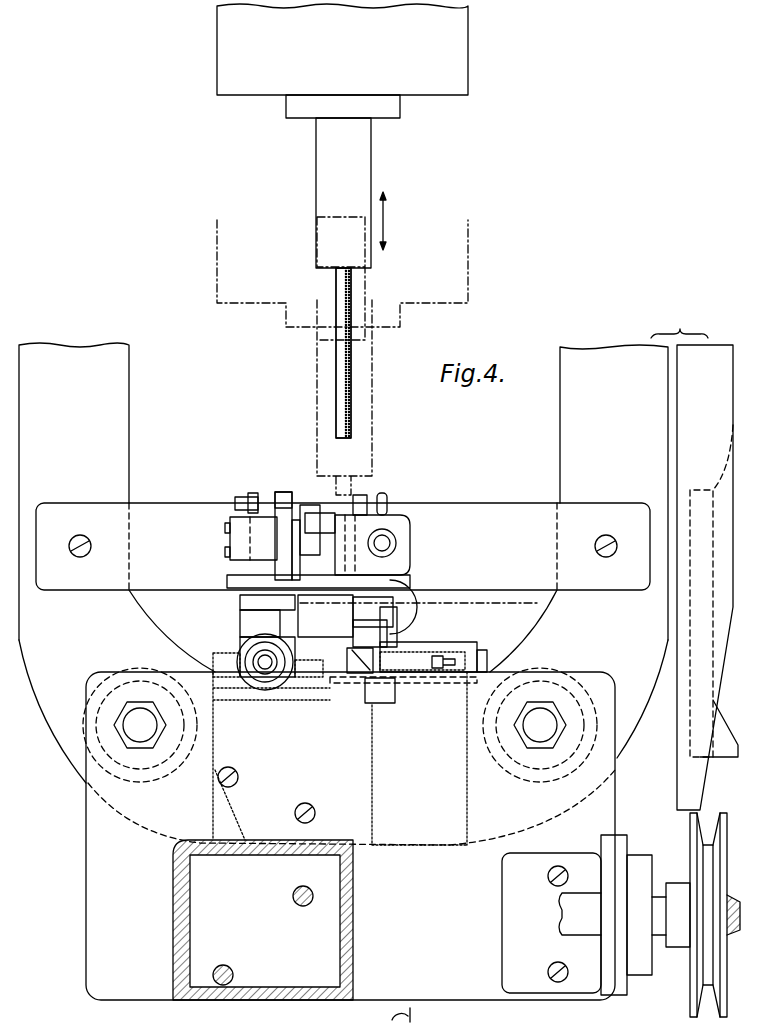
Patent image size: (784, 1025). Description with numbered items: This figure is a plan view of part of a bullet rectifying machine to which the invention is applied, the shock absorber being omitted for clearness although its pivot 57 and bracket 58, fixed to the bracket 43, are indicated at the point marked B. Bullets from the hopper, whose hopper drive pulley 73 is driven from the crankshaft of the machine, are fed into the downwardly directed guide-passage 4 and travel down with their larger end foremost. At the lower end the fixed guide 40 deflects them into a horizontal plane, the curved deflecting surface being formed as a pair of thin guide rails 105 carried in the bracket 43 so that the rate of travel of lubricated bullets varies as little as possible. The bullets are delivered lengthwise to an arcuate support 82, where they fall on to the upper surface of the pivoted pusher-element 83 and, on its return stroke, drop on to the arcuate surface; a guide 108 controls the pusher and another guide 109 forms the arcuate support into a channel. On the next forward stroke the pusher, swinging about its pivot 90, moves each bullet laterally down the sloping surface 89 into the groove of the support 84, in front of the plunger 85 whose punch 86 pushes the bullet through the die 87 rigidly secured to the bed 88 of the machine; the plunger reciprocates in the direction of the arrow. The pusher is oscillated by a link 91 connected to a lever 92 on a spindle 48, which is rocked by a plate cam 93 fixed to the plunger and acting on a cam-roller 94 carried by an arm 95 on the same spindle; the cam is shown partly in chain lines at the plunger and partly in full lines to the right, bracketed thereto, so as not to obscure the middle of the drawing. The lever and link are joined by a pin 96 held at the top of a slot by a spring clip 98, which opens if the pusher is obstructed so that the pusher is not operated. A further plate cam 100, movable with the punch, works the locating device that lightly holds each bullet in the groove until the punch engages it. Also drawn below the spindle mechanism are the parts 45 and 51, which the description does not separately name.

The guide-passage 4 is at (250, 660).
The fixed guide 40 is at (238, 600).
The bracket 43 is at (255, 640).
The adjusting screw 45 is at (423, 655).
The spindle 48 is at (372, 705).
The stop 51 is at (482, 660).
The pivot 57 is at (316, 506).
The bracket 58 is at (288, 500).
The hopper drive pulley 73 is at (697, 993).
The arcuate support 82 is at (275, 496).
The pusher-element 83 is at (229, 541).
The support 84 is at (381, 513).
The plunger 85 is at (332, 176).
The punch 86 is at (340, 357).
The die 87 is at (343, 705).
The bed 88 is at (118, 392).
The sloping surface 89 is at (323, 524).
The pivot 90 is at (325, 616).
The link 91 is at (400, 588).
The lever 92 is at (407, 590).
The plate cam 93 is at (365, 279).
The cam-roller 94 is at (400, 613).
The arm 95 is at (530, 605).
The pin 96 is at (332, 552).
The spring clip 98 is at (392, 558).
The plate cam 100 is at (717, 734).
The guide rails 105 is at (240, 616).
The guide 108 is at (360, 510).
The guide 109 is at (250, 598).
The bar B is at (265, 508).